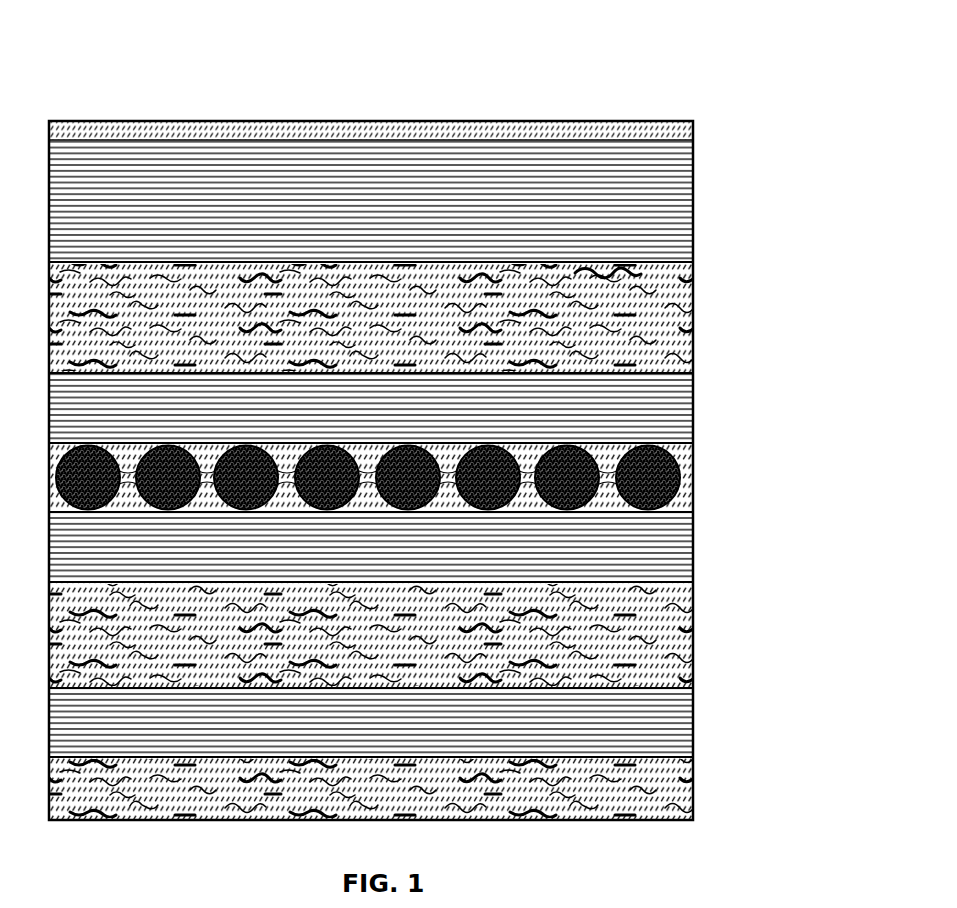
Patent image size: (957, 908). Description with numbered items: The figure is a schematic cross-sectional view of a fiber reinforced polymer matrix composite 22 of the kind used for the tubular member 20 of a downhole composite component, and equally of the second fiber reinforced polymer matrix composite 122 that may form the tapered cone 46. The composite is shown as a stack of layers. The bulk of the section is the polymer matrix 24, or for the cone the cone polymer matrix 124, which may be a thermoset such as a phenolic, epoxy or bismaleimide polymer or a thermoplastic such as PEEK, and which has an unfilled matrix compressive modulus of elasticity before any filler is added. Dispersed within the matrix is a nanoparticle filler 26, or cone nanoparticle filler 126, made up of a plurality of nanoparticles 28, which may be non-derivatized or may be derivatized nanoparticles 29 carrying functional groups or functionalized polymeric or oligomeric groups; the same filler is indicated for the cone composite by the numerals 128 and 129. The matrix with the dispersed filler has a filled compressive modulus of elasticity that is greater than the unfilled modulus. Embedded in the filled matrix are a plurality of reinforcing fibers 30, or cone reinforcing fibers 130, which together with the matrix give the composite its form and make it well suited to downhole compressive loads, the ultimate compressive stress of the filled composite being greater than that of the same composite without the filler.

The tubular member 20 is at (371, 423).
The tapered cone 46 is at (363, 100).
The fiber reinforced polymer matrix composite 22 is at (371, 150).
The second fiber reinforced polymer matrix composite 122 is at (487, 120).
The polymer matrix 24 is at (371, 99).
The cone polymer matrix 124 is at (558, 124).
The reinforcing fibers 30 is at (414, 283).
The cone reinforcing fibers 130 is at (623, 137).
The derivatized nanoparticles 29 is at (681, 200).
The fiber 129 is at (612, 272).
The nanoparticles 28 is at (422, 273).
The fibers 128 is at (665, 272).
The nanoparticle filler 26 is at (422, 294).
The cone nanoparticle filler 126 is at (673, 292).